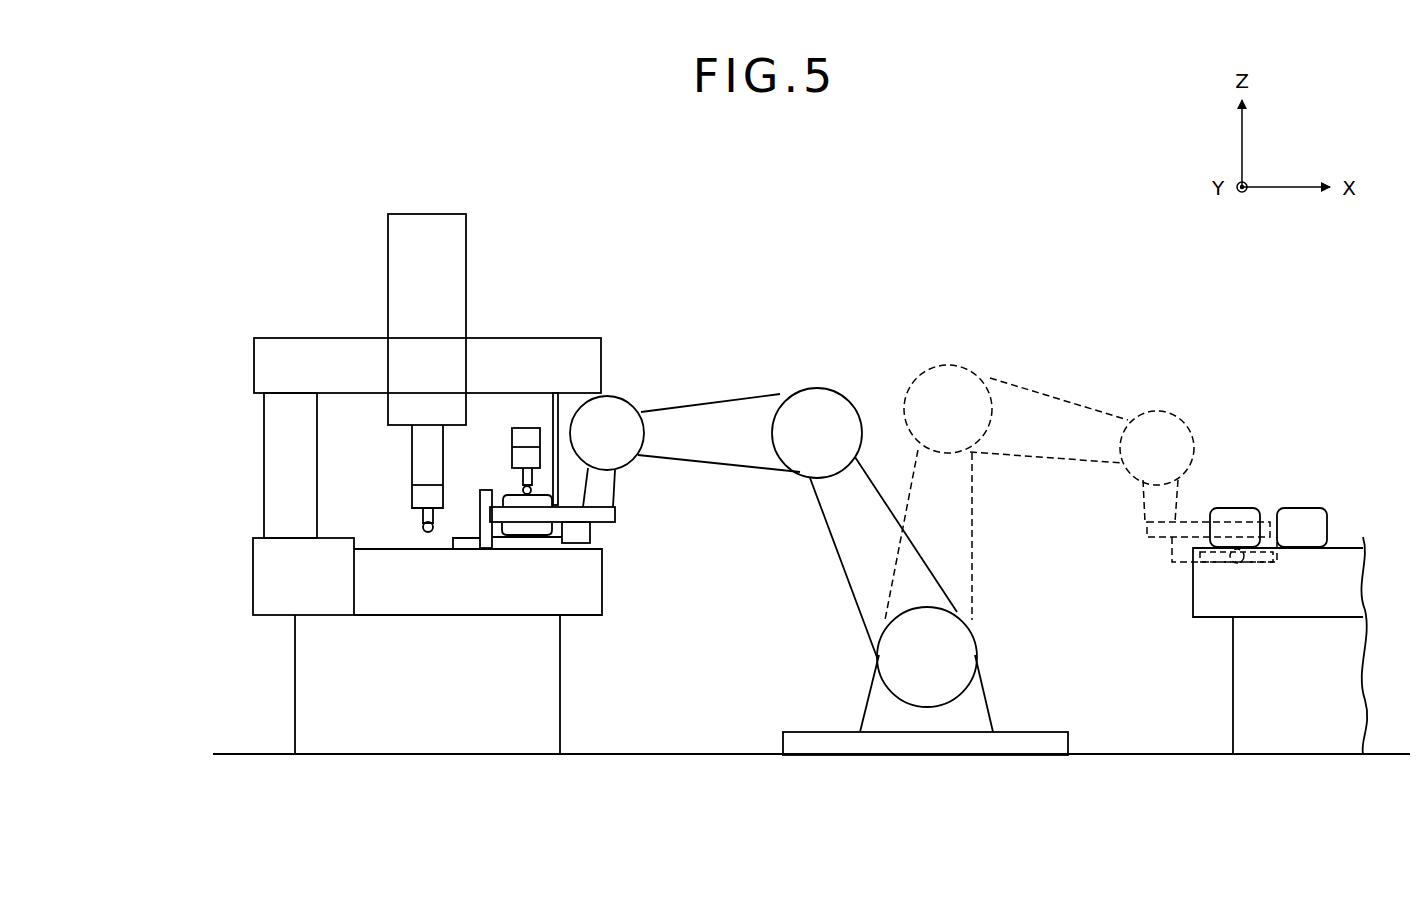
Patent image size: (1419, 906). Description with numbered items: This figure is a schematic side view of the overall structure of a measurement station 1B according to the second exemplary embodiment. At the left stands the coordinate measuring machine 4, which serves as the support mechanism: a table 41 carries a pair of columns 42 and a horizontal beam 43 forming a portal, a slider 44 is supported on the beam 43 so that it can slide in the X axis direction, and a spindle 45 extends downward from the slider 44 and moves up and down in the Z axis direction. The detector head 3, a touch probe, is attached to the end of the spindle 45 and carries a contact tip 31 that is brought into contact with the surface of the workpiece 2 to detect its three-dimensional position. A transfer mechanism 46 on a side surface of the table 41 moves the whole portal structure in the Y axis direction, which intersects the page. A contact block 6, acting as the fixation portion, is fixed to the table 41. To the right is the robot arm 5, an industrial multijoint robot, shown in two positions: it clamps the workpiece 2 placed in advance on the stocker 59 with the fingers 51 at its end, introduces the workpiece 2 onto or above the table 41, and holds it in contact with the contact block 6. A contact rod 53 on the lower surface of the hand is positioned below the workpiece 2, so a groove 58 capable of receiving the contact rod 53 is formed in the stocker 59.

The measurement station 1B is at (590, 198).
The workpiece 2 is at (542, 493).
The detector head 3 is at (443, 493).
The coordinate measuring machine 4 is at (480, 204).
The robot arm 5 is at (898, 358).
The contact block 6 is at (480, 520).
The contact tip 31 is at (417, 522).
The table 41 is at (372, 547).
The columns 42 is at (272, 450).
The horizontal beam 43 is at (275, 372).
The slider 44 is at (404, 283).
The spindle 45 is at (418, 452).
The transfer mechanism 46 is at (255, 565).
The fingers 51 is at (615, 513).
The contact rod 53 is at (538, 548).
The groove 58 is at (1245, 550).
The stocker 59 is at (1193, 600).